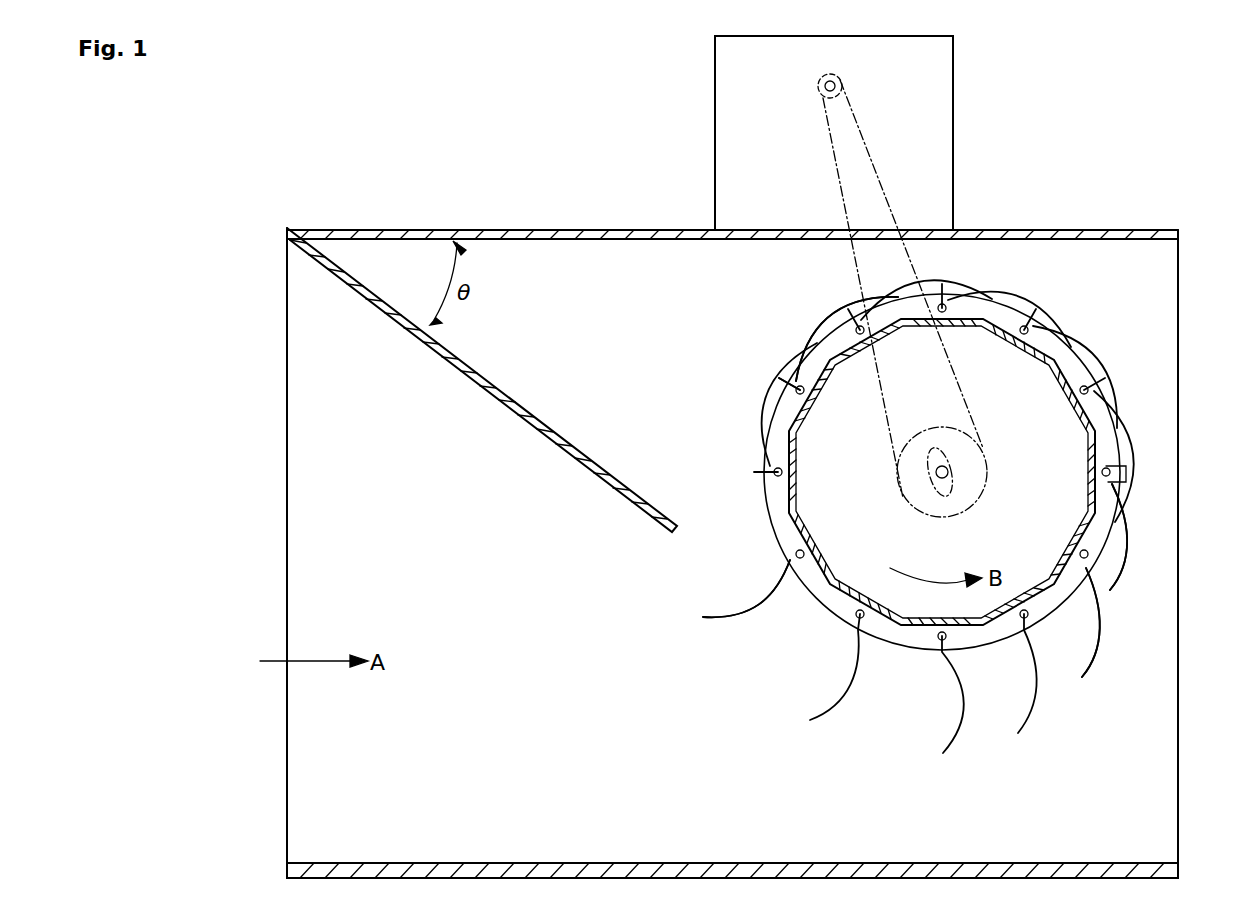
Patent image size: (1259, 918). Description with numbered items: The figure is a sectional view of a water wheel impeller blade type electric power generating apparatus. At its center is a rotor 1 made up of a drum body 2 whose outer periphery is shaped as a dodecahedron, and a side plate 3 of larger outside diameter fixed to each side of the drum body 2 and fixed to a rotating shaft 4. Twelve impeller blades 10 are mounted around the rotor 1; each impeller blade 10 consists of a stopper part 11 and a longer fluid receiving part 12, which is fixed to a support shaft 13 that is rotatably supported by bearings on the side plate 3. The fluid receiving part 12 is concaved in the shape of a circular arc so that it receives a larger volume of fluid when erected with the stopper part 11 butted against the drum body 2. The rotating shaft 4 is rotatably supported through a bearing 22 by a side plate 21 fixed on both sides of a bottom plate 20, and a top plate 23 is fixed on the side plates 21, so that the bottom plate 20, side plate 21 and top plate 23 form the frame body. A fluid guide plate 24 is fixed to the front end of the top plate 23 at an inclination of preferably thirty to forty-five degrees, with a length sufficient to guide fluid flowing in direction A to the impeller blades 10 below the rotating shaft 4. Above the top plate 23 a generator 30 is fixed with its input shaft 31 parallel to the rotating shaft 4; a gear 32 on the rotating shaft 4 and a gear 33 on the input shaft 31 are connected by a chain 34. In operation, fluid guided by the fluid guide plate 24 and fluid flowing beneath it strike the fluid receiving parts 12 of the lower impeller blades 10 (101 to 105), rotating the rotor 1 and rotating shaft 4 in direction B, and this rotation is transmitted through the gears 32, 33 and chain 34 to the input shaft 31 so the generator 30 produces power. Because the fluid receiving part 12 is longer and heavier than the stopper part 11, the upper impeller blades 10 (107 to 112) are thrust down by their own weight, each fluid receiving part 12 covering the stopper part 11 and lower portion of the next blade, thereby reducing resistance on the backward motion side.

The rotor 1 is at (1009, 472).
The drum body 2 is at (1098, 440).
The side plate 3 is at (1085, 372).
The rotating shaft 4 is at (950, 475).
The impeller blade 10 is at (965, 535).
The stopper part 11 is at (796, 392).
The fluid receiving part 12 is at (848, 318).
The support shaft 13 is at (1120, 480).
The bottom plate 20 is at (568, 865).
The side plate 21 is at (642, 268).
The bearing 22 is at (986, 456).
The top plate 23 is at (565, 228).
The fluid guide plate 24 is at (514, 410).
The generator 30 is at (940, 125).
The input shaft 31 is at (826, 88).
The gear 32 is at (903, 502).
The gear 33 is at (825, 100).
The chain 34 is at (913, 193).
The impeller blade 101 is at (744, 620).
The impeller blade 105 is at (1098, 650).
The impeller blade 107 is at (1128, 452).
The impeller blade 112 is at (778, 400).